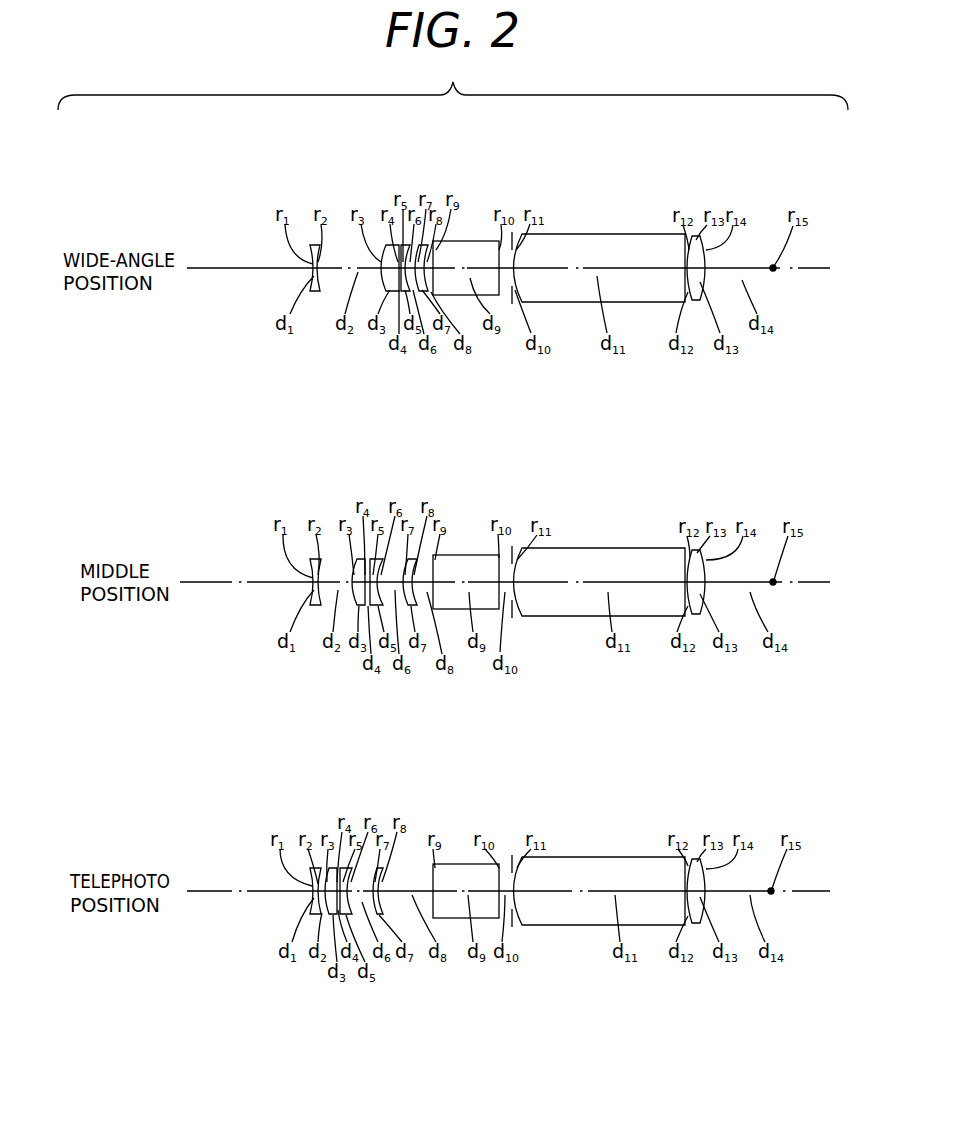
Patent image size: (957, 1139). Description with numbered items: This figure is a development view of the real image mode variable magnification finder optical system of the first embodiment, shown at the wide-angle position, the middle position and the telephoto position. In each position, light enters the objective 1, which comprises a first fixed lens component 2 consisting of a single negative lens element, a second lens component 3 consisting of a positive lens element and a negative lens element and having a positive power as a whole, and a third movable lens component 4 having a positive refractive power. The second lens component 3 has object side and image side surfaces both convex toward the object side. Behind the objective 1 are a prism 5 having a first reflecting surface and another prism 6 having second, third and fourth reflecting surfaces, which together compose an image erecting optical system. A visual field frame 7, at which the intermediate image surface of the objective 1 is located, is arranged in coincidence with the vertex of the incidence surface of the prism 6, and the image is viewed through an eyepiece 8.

The objective 1 is at (435, 190).
The first fixed lens component 2 is at (316, 294).
The second lens component 3 is at (422, 350).
The third movable lens component 4 is at (424, 296).
The prism 5 is at (477, 240).
The prism 6 is at (636, 235).
The visual field frame 7 is at (512, 318).
The eyepiece 8 is at (697, 302).